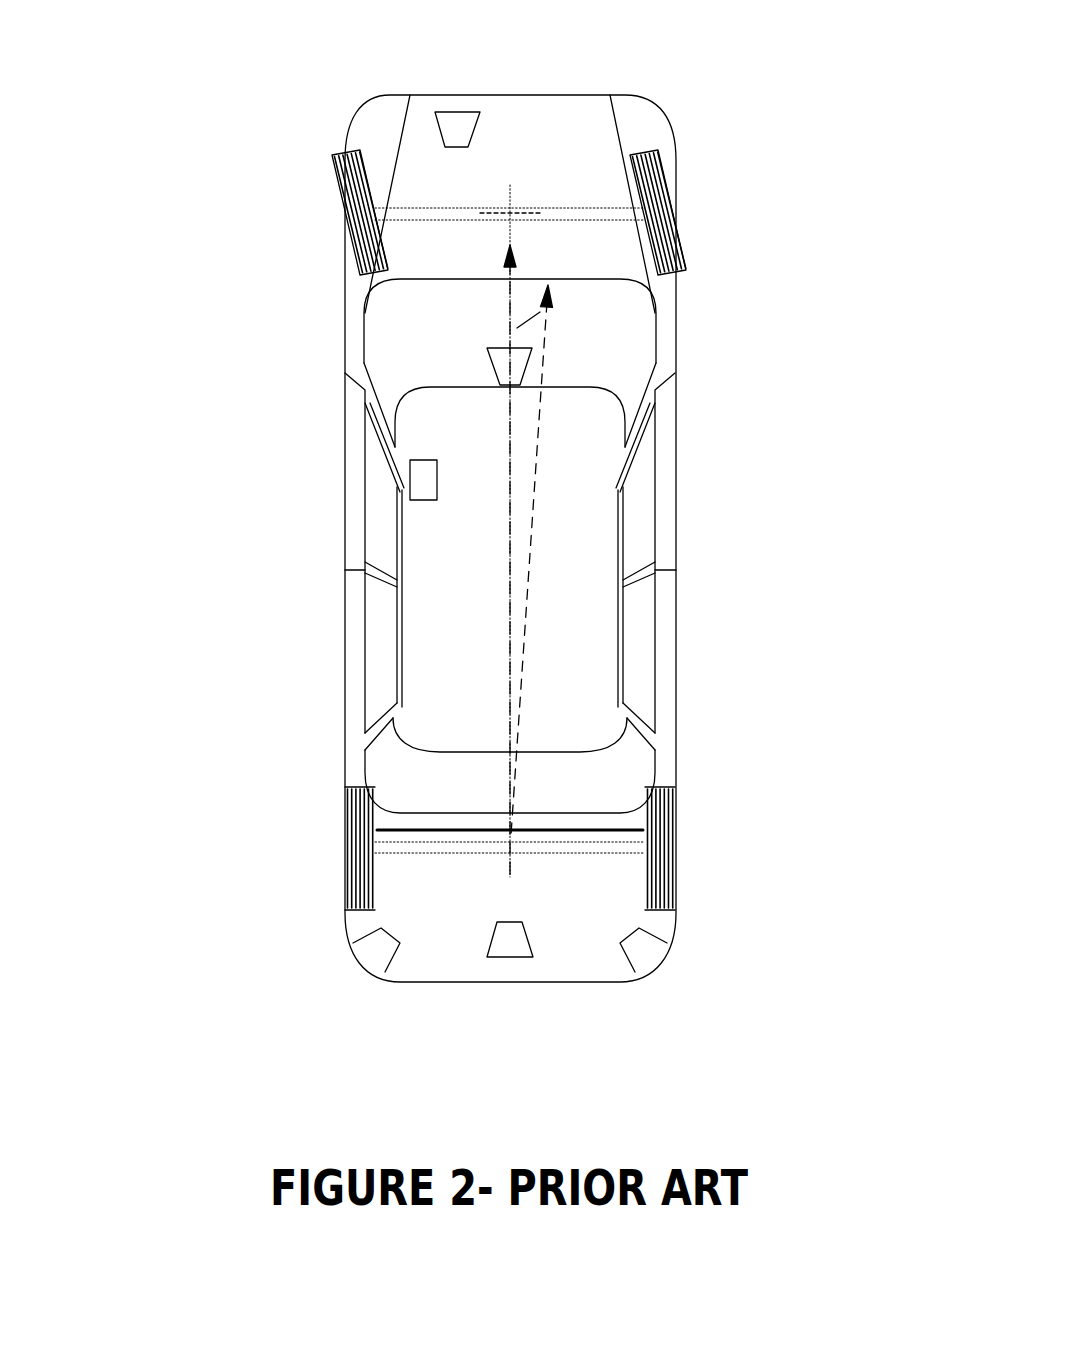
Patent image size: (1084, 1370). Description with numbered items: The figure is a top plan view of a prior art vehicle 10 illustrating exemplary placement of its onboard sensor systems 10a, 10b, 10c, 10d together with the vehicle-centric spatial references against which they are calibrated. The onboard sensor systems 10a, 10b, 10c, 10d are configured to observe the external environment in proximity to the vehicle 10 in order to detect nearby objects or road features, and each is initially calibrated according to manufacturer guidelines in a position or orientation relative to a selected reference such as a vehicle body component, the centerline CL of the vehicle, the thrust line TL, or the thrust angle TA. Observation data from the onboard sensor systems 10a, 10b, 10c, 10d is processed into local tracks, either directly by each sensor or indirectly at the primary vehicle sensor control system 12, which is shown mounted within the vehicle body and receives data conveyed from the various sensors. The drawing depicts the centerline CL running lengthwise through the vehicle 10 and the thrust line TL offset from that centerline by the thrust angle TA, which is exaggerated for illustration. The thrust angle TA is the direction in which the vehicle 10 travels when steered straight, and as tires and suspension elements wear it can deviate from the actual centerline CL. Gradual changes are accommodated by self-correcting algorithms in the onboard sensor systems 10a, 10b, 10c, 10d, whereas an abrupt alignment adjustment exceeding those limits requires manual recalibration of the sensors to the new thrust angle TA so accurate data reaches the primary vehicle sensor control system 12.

The vehicle 10 is at (690, 141).
The onboard sensor system 10a is at (457, 132).
The onboard sensor system 10b is at (508, 369).
The onboard sensor system 10c is at (642, 947).
The onboard sensor system 10d is at (510, 938).
The primary vehicle sensor control system 12 is at (412, 482).
The thrust angle TA is at (527, 320).
The thrust line TL is at (554, 538).
The centerline CL is at (492, 693).